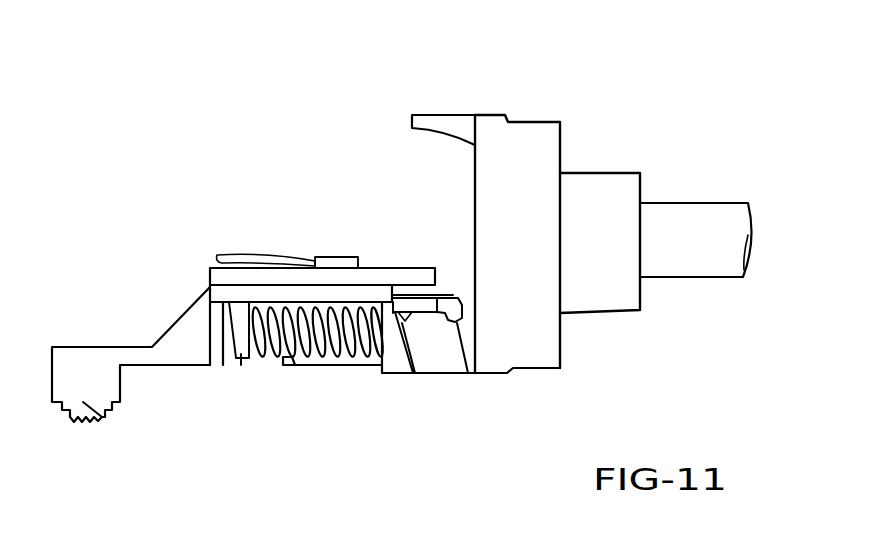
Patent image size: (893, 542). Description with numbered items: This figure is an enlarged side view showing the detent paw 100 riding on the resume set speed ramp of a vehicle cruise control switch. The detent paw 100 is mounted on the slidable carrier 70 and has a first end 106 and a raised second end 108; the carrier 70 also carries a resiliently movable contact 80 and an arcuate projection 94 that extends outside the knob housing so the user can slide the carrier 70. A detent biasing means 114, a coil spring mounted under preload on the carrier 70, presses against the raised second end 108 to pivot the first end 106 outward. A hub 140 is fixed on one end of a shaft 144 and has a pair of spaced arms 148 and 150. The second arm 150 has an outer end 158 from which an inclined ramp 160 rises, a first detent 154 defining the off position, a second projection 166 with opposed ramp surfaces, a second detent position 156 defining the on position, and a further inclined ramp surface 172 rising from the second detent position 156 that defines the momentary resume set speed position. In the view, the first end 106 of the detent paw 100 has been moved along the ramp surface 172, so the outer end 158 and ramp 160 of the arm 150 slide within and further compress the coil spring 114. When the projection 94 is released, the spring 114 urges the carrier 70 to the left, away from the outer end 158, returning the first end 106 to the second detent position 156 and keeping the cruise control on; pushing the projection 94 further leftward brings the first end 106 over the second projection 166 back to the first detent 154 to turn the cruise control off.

The carrier 70 is at (178, 230).
The contact 80 is at (238, 253).
The arcuate projection 94 is at (102, 417).
The detent paw 100 is at (450, 296).
The first end 106 is at (463, 303).
The raised second end 108 is at (243, 364).
The detent biasing means 114 is at (293, 373).
The hub 140 is at (532, 117).
The shaft 144 is at (697, 212).
The arm 148 is at (423, 112).
The second arm 150 is at (395, 375).
The first detent 154 is at (412, 375).
The second detent position 156 is at (468, 375).
The outer end 158 is at (335, 367).
The inclined ramp 160 is at (335, 378).
The second projection 166 is at (433, 320).
The inclined ramp surface 172 is at (466, 320).